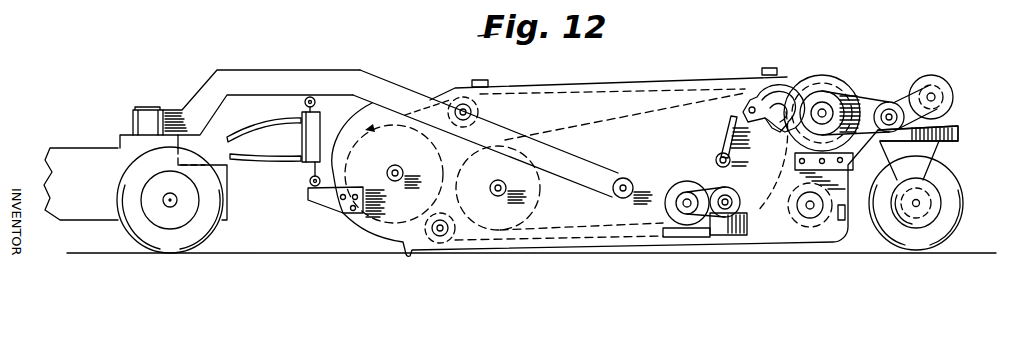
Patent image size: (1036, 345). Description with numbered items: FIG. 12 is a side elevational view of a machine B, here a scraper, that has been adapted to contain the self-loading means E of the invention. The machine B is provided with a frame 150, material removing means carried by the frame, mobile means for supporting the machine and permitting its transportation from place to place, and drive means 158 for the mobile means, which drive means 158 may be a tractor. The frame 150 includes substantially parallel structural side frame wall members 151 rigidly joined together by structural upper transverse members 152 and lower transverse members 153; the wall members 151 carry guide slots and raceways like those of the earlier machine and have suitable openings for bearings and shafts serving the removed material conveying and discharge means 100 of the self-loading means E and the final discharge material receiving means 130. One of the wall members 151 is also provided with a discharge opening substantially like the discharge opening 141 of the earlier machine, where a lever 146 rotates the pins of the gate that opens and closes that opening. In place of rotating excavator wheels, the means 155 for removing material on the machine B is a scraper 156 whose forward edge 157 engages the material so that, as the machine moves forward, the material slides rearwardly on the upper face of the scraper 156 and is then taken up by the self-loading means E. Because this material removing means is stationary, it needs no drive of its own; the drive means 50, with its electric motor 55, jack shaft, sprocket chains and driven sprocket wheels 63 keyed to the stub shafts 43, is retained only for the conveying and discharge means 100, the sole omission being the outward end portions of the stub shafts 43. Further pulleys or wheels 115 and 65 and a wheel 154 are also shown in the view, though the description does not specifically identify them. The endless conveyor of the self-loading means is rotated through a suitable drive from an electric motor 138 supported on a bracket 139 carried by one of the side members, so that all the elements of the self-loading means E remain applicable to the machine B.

The drive means 158 is at (267, 54).
The upper transverse members 152 is at (498, 81).
The machine B is at (559, 77).
The side frame wall members 151 is at (730, 107).
The discharge opening 141 is at (754, 93).
The pulley 115 is at (796, 73).
The driven sprocket wheels 63 is at (833, 102).
The self-loading means E is at (882, 92).
The electric motor 55 is at (940, 88).
The lever 146 is at (727, 133).
The drive means 50 is at (398, 162).
The stub shafts 43 is at (400, 168).
The electric motor 138 is at (682, 184).
The removed material conveying and discharge means 100 is at (783, 110).
The final discharge material receiving means 130 is at (740, 186).
The rear wheel 154 is at (904, 157).
The lower transverse members 153 is at (843, 221).
The forward edge 157 is at (402, 263).
The scraper 156 is at (413, 258).
The means for removing material 155 is at (434, 259).
The frame 150 is at (637, 248).
The bracket 139 is at (706, 234).
The pulley 65 is at (812, 220).